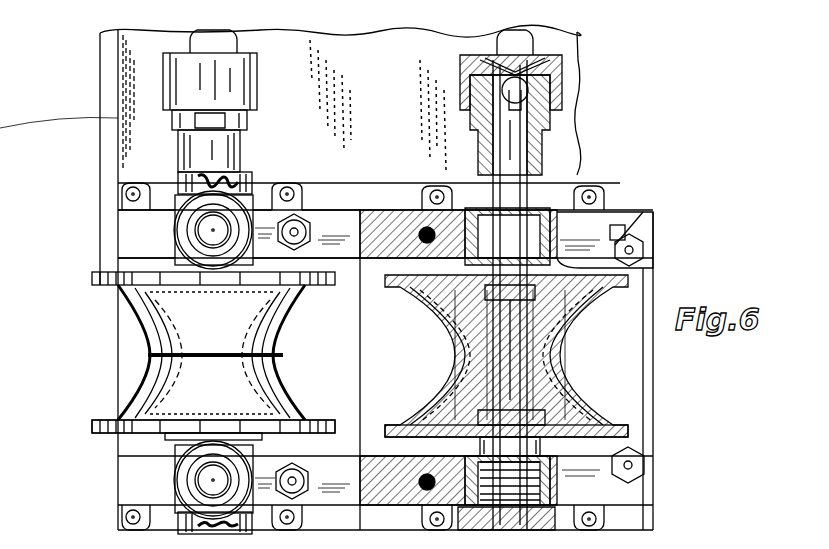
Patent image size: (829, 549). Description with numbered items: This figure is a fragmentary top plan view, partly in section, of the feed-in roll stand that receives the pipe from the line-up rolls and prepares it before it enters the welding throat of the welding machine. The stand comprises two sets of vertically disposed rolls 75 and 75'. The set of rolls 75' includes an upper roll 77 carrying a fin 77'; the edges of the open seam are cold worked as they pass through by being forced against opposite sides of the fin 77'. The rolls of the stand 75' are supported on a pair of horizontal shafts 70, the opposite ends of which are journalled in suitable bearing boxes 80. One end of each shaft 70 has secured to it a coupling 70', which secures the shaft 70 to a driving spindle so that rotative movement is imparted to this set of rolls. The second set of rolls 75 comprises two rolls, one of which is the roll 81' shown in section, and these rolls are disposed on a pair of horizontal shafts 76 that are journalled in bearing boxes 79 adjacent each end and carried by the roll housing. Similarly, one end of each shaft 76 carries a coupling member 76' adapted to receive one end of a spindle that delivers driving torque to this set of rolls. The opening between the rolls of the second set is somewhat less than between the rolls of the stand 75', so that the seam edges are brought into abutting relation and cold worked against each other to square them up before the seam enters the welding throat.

The horizontal shaft 70 is at (203, 242).
The coupling 70' is at (150, 101).
The bearing box 80 is at (178, 222).
The upper roll 77 is at (213, 356).
The fin 77' is at (240, 355).
The set of rolls 75' is at (204, 452).
The coupling member 76' is at (545, 102).
The bearing box 79 is at (575, 195).
The roll 81' is at (520, 356).
The horizontal shaft 76 is at (506, 356).
The set of rolls 75 is at (539, 441).